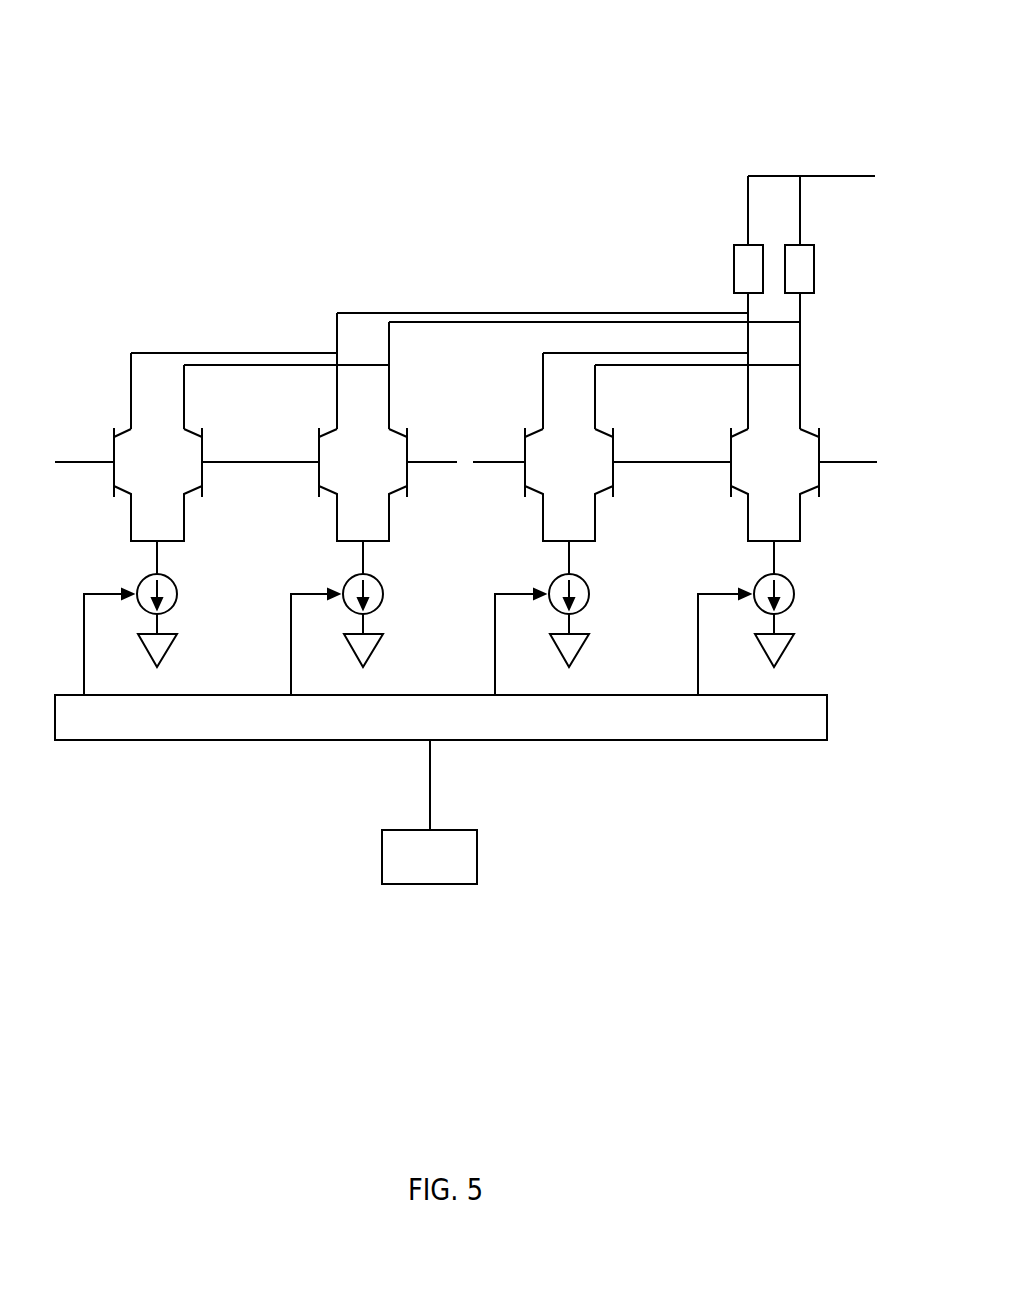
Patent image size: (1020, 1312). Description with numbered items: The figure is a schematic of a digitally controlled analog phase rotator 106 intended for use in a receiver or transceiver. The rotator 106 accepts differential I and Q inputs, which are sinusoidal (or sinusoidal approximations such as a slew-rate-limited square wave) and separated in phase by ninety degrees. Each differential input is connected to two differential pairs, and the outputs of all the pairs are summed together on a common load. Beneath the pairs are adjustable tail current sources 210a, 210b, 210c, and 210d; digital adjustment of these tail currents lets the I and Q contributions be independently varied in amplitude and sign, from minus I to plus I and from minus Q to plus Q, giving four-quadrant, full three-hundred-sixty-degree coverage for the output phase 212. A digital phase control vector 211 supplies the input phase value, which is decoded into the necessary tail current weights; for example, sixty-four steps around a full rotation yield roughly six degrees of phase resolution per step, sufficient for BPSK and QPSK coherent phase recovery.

The digitally controlled analog phase rotator 106 is at (469, 456).
The tail current 210a is at (178, 597).
The tail current 210b is at (384, 597).
The tail current 210c is at (590, 597).
The tail current 210d is at (795, 597).
The digital phase control vector 211 is at (718, 740).
The phase 212 is at (477, 847).